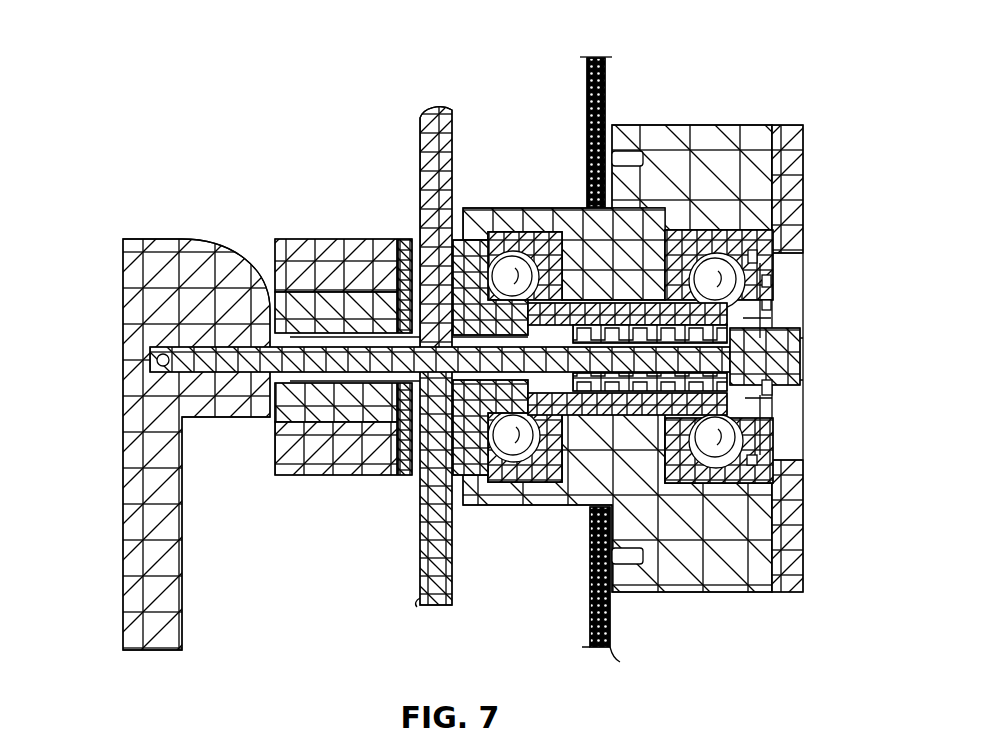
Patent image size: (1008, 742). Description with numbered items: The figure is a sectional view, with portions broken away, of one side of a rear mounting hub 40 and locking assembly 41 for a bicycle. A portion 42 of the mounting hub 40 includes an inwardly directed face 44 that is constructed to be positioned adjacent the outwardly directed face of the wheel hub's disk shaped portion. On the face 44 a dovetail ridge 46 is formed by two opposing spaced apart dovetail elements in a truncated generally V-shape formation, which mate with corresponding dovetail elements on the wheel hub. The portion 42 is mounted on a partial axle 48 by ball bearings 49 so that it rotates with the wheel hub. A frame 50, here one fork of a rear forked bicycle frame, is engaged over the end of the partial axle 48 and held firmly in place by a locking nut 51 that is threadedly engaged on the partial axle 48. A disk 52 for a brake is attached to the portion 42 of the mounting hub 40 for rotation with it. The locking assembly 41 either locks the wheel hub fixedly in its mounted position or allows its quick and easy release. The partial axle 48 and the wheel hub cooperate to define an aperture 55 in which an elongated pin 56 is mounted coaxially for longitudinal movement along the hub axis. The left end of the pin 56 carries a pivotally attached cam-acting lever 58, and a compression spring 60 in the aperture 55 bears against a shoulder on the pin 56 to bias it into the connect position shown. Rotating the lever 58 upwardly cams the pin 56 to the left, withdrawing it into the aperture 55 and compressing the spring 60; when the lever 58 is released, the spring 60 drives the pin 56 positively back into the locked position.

The rear mounting hub 40 is at (658, 26).
The locking assembly 41 is at (108, 383).
The portion of mounting hub 42 is at (678, 135).
The inwardly directed face 44 is at (767, 157).
The dovetail ridge 46 is at (785, 172).
The partial axle 48 is at (768, 290).
The ball bearings 49 is at (500, 268).
The frame 50 is at (420, 130).
The locking nut 51 is at (293, 242).
The disk 52 is at (588, 97).
The aperture 55 is at (788, 392).
The elongated pin 56 is at (197, 358).
The cam-acting lever 58 is at (153, 533).
The compression spring 60 is at (662, 393).